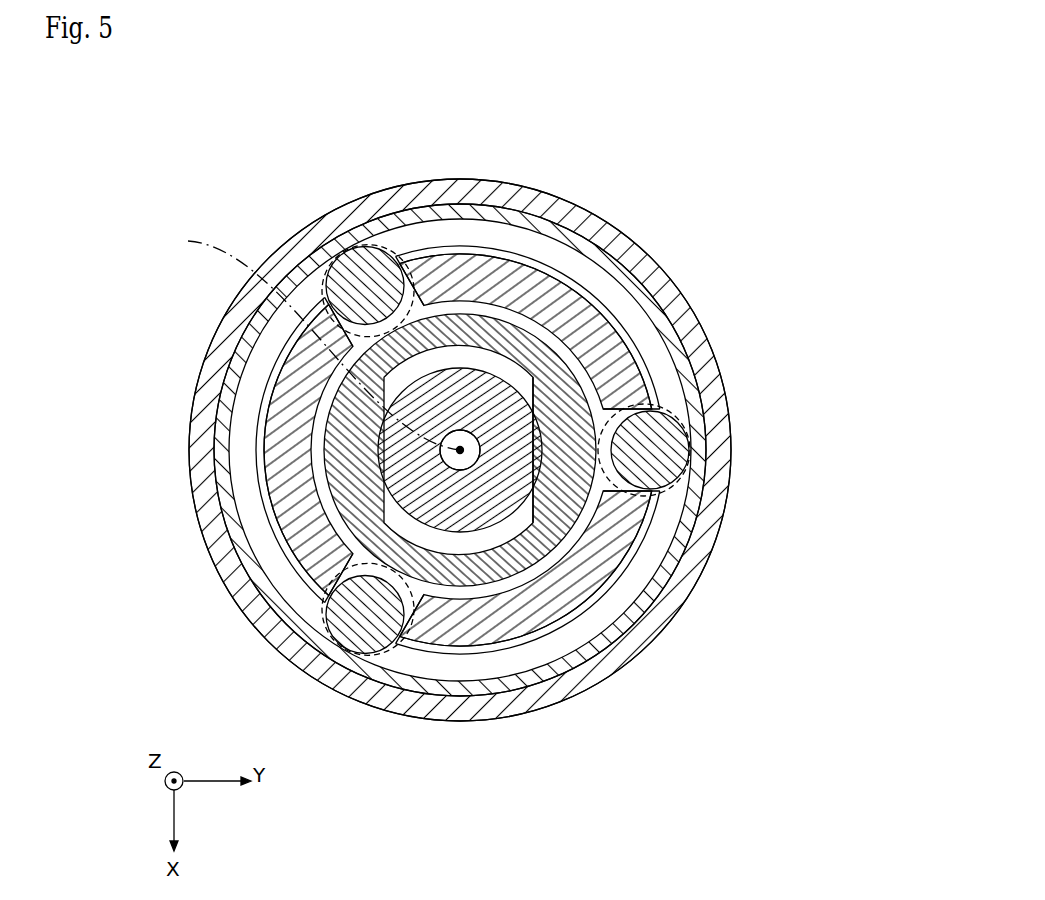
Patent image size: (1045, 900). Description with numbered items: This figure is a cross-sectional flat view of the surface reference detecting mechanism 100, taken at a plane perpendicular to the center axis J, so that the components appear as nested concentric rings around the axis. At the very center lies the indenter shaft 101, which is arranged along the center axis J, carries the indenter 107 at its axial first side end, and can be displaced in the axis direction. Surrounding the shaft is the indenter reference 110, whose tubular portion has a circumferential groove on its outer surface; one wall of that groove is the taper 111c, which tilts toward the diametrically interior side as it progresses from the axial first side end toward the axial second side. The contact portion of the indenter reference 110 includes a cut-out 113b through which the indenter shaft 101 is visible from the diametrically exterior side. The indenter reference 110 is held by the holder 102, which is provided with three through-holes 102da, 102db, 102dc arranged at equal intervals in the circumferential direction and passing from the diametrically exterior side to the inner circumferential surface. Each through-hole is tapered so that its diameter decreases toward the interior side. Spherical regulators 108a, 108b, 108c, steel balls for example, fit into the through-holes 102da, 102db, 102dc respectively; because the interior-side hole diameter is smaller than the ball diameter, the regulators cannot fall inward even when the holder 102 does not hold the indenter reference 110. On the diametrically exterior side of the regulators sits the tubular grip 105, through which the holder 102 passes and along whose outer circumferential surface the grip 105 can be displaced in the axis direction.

The surface reference detecting mechanism 100 is at (676, 163).
The indenter shaft 101 is at (512, 403).
The holder 102 is at (645, 385).
The through-hole 102da is at (658, 438).
The through-hole 102db is at (348, 630).
The through-hole 102dc is at (340, 278).
The grip 105 is at (713, 397).
The indenter 107 is at (460, 430).
The regulator 108a is at (685, 448).
The regulator 108b is at (342, 640).
The regulator 108c is at (362, 273).
The indenter reference 110 is at (578, 396).
The taper 111c is at (575, 541).
The cut-out 113b is at (528, 523).
The center axis J is at (315, 342).